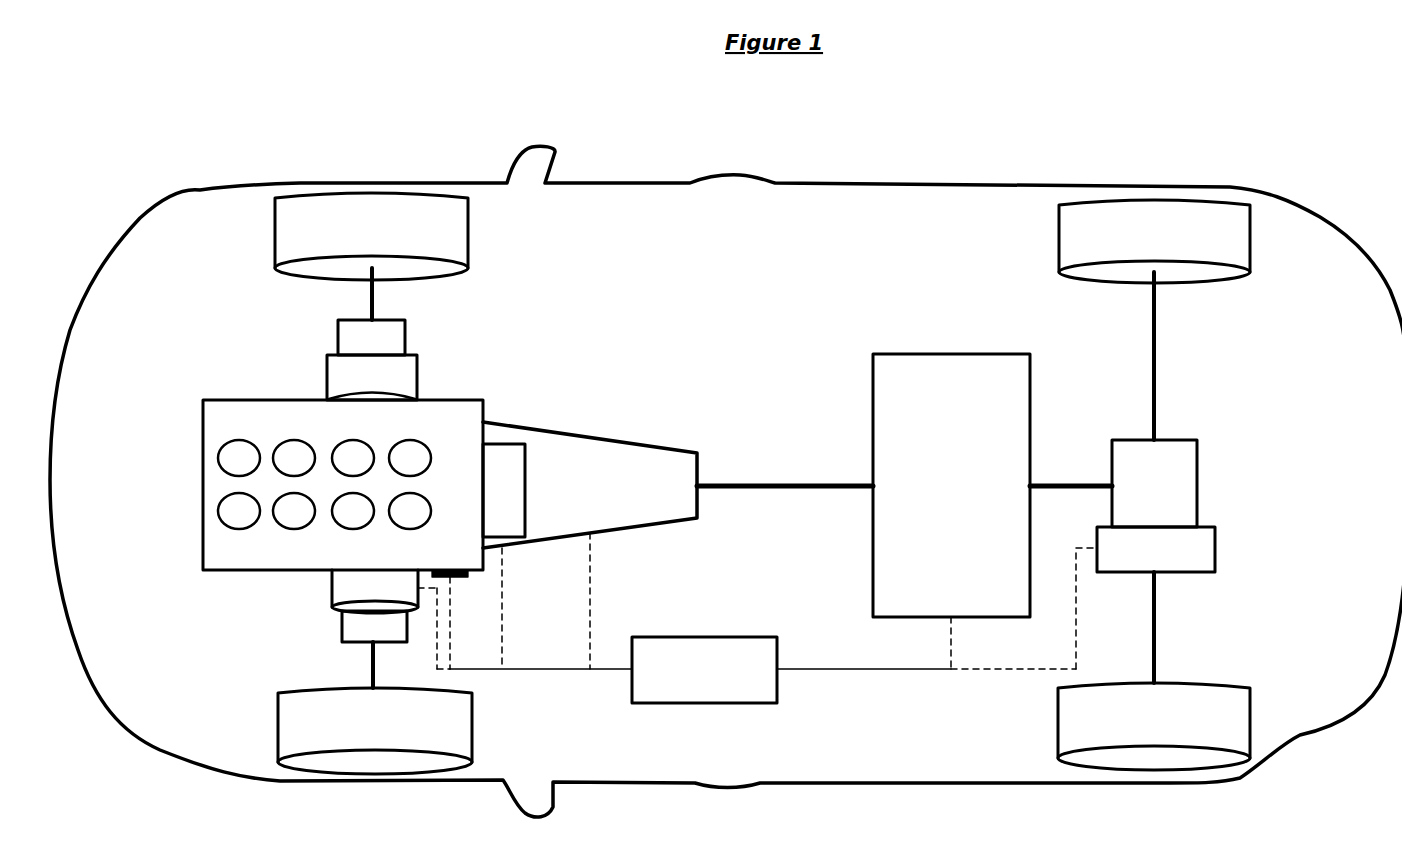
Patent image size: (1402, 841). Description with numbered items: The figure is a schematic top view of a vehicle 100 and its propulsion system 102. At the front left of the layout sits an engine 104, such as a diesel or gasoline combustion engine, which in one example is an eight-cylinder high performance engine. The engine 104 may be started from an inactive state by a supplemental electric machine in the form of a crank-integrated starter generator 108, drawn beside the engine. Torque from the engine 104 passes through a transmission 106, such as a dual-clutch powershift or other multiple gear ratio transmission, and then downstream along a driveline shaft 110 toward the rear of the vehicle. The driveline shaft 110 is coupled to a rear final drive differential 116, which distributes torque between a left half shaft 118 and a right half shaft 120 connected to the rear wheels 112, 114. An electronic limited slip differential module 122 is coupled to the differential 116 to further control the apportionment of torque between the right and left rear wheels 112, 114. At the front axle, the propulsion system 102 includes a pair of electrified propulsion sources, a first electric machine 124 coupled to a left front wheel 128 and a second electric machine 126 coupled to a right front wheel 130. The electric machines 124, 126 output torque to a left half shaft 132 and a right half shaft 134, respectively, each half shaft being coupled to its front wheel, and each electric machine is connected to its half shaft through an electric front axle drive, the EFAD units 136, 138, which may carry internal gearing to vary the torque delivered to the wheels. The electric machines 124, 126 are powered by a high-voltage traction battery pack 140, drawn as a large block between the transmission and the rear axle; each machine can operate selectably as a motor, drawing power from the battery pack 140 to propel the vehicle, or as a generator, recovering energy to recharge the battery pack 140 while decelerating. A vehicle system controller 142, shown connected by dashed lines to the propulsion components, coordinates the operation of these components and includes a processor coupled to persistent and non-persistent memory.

The vehicle 100 is at (848, 183).
The propulsion system 102 is at (624, 311).
The engine 104 is at (203, 434).
The transmission 106 is at (590, 435).
The crank-integrated starter generator 108 is at (503, 443).
The driveline shaft 110 is at (737, 485).
The rear wheel 112 is at (1250, 725).
The rear wheel 114 is at (1252, 240).
The rear final drive differential 116 is at (1197, 492).
The left half shaft 118 is at (1158, 630).
The right half shaft 120 is at (1157, 313).
The electronic limited slip differential module 122 is at (1215, 547).
The first electric machine 124 is at (332, 588).
The second electric machine 126 is at (417, 368).
The left front wheel 128 is at (278, 730).
The right front wheel 130 is at (275, 236).
The left half shaft 132 is at (370, 663).
The right half shaft 134 is at (368, 295).
The electric front axle drive unit 136 is at (342, 625).
The electric front axle drive unit 138 is at (405, 335).
The high-voltage traction battery pack 140 is at (952, 354).
The vehicle system controller 142 is at (705, 703).